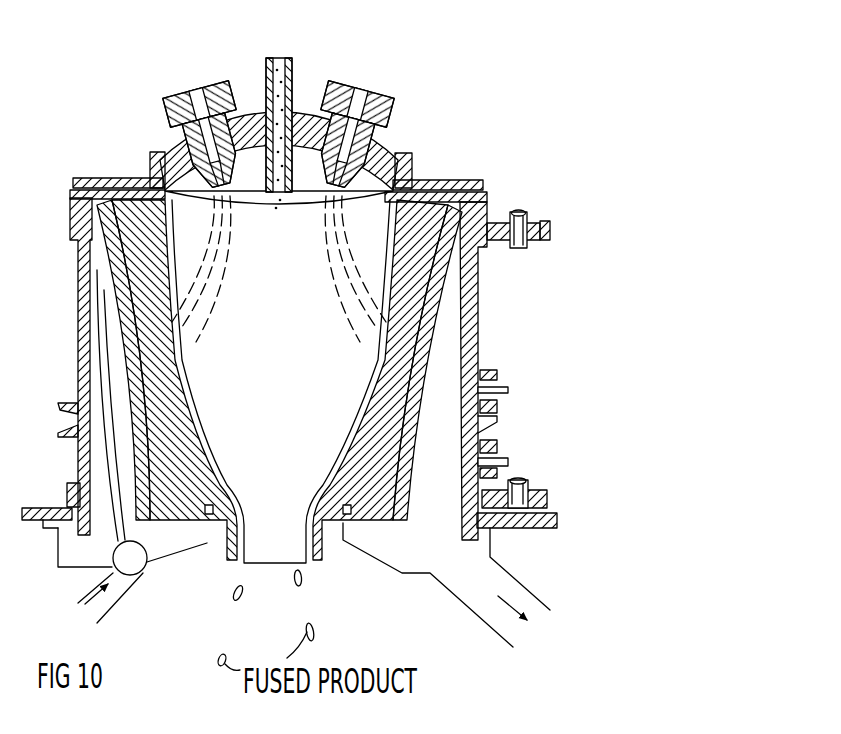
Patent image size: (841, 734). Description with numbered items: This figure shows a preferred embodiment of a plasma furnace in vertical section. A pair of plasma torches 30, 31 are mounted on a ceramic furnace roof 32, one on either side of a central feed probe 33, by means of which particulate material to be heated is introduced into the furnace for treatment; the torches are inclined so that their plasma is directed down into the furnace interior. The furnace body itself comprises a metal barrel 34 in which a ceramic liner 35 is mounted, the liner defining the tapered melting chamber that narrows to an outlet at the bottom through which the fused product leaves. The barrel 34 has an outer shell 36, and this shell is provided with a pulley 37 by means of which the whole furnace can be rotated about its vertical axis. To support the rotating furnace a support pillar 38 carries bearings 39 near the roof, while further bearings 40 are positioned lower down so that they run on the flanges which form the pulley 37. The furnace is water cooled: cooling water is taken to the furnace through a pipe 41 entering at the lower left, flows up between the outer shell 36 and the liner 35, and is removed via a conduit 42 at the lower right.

The plasma torch 30 is at (228, 80).
The plasma torch 31 is at (378, 92).
The ceramic furnace roof 32 is at (392, 150).
The feed probe 33 is at (292, 62).
The metal barrel 34 is at (410, 488).
The ceramic liner 35 is at (380, 367).
The outer shell 36 is at (478, 331).
The pulley 37 is at (62, 403).
The support pillar 38 is at (520, 249).
The bearings 39 is at (497, 221).
The bearings 40 is at (510, 392).
The pipe 41 is at (113, 600).
The conduit 42 is at (473, 597).